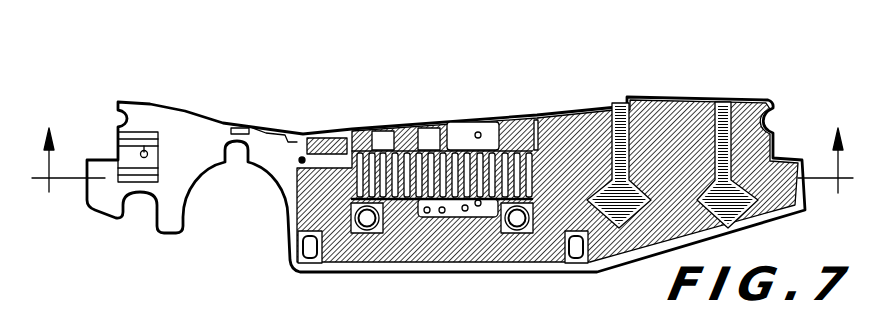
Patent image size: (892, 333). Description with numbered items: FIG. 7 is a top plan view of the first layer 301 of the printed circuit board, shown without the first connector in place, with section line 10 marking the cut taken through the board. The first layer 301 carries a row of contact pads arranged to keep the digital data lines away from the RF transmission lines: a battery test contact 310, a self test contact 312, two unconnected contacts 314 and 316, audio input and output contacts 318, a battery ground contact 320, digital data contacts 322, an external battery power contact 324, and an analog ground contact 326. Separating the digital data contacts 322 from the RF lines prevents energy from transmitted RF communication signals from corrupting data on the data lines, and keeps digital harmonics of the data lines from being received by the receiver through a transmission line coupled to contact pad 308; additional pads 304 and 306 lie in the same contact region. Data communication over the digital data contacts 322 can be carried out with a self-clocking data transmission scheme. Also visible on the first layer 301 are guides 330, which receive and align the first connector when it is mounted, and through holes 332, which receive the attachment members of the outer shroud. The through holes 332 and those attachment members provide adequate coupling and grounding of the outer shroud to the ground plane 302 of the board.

The section line 10- 10 is at (442, 148).
The first layer 301 is at (766, 50).
The ground plane 302 is at (668, 107).
The contact 304 is at (538, 147).
The contact 306 is at (517, 147).
The contact pad 308 is at (527, 147).
The battery test contact 310 is at (507, 147).
The self test contact 312 is at (490, 147).
The unconnected contact 314 is at (467, 147).
The unconnected contact 316 is at (443, 147).
The audio input and output contacts 318 is at (424, 147).
The battery ground contact 320 is at (413, 147).
The digital data contacts 322 is at (373, 147).
The external battery power contact 324 is at (368, 147).
The analog ground contact 326 is at (357, 150).
The guides 330 is at (368, 222).
The through holes 332 is at (309, 250).